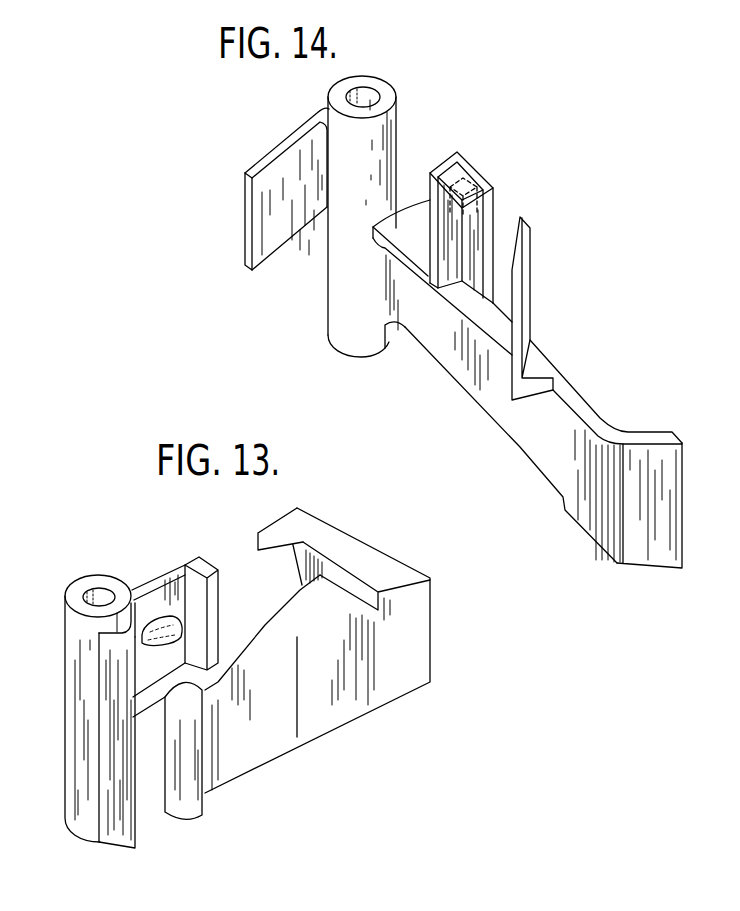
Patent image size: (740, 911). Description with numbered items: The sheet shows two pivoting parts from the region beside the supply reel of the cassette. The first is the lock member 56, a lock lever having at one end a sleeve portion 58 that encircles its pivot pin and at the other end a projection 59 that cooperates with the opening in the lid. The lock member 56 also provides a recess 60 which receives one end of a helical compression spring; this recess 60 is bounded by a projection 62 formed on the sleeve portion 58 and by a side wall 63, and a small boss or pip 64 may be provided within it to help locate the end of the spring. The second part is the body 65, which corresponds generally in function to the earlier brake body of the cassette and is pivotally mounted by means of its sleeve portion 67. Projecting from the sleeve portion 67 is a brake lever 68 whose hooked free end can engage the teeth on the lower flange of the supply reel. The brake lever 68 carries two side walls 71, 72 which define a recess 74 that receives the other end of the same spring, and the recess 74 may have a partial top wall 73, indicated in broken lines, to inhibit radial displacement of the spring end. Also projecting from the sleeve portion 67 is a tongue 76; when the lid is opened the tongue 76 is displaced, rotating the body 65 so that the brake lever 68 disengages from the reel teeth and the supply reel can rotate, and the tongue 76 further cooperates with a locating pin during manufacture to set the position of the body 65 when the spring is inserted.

In FIG. 13, the lock member 56 is at (264, 602).
In FIG. 13, the sleeve portion 58 is at (77, 640).
In FIG. 13, the projection 59 is at (312, 531).
In FIG. 13, the recess 60 is at (178, 563).
In FIG. 13, the projection 62 is at (122, 830).
In FIG. 13, the side wall 63 is at (200, 632).
In FIG. 13, the boss or pip 64 is at (172, 617).
In FIG. 14, the body 65 is at (600, 347).
In FIG. 14, the sleeve portion 67 is at (366, 82).
In FIG. 14, the brake lever 68 is at (598, 420).
In FIG. 14, the side wall 71 is at (463, 153).
In FIG. 14, the side wall 72 is at (521, 250).
In FIG. 14, the partial top wall 73 is at (470, 188).
In FIG. 14, the recess 74 is at (484, 312).
In FIG. 14, the tongue 76 is at (263, 158).